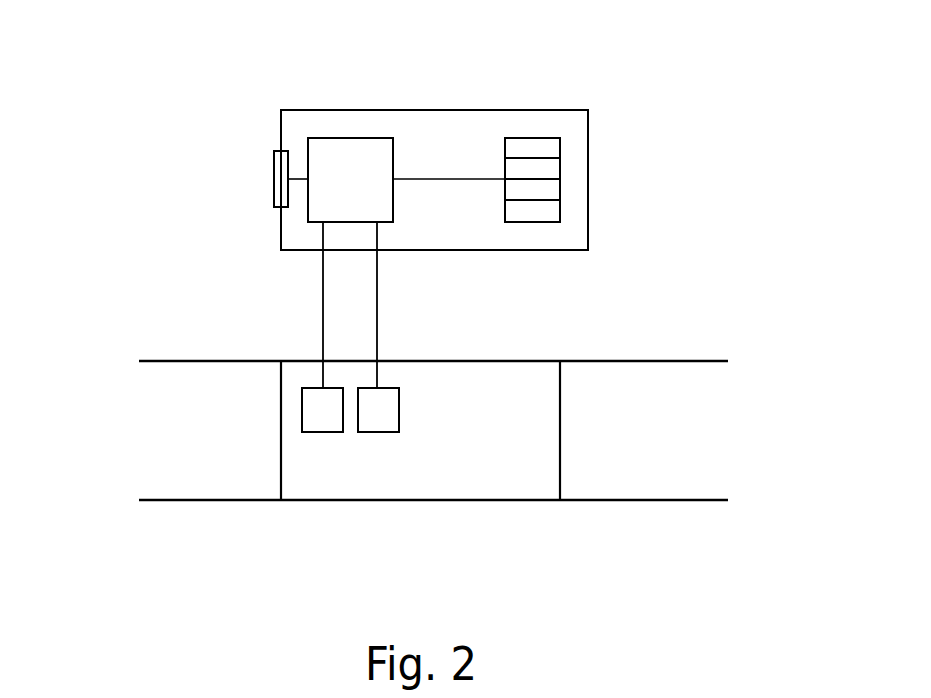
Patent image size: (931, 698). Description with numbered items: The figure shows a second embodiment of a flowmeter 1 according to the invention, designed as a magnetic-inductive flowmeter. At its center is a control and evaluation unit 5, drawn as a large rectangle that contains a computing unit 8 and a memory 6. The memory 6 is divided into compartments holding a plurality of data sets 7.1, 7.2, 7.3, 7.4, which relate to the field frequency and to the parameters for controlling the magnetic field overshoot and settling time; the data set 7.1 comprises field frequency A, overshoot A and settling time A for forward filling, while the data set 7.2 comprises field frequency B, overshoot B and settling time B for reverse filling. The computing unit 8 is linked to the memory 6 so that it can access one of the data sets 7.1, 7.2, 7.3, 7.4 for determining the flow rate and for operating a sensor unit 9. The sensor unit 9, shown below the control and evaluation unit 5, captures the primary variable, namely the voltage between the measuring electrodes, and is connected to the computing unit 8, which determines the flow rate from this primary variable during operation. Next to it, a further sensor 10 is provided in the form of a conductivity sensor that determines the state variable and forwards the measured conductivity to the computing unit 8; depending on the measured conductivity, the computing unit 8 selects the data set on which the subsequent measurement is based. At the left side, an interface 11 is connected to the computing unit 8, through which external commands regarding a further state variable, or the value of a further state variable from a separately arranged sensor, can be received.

The flowmeter 1 is at (113, 81).
The control and evaluation unit 5 is at (441, 110).
The memory 6 is at (560, 167).
The data set 7.1 is at (552, 150).
The data set 7.2 is at (552, 174).
The data set 7.3 is at (552, 192).
The data set 7.4 is at (552, 212).
The computing unit 8 is at (337, 138).
The sensor unit 9 is at (323, 432).
The further sensor 10 is at (377, 432).
The interface 11 is at (274, 179).